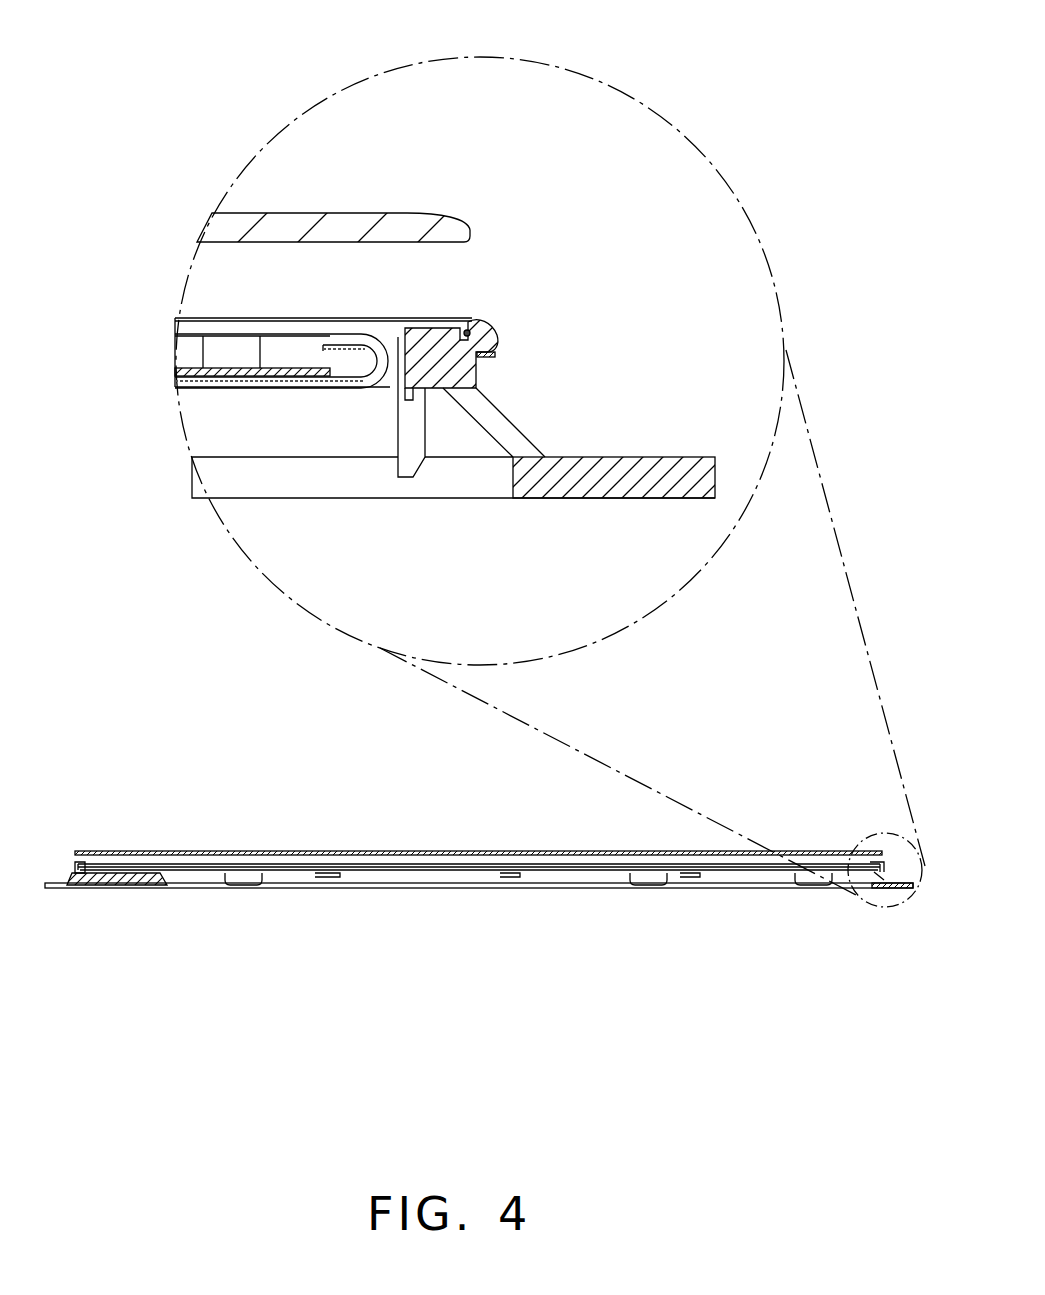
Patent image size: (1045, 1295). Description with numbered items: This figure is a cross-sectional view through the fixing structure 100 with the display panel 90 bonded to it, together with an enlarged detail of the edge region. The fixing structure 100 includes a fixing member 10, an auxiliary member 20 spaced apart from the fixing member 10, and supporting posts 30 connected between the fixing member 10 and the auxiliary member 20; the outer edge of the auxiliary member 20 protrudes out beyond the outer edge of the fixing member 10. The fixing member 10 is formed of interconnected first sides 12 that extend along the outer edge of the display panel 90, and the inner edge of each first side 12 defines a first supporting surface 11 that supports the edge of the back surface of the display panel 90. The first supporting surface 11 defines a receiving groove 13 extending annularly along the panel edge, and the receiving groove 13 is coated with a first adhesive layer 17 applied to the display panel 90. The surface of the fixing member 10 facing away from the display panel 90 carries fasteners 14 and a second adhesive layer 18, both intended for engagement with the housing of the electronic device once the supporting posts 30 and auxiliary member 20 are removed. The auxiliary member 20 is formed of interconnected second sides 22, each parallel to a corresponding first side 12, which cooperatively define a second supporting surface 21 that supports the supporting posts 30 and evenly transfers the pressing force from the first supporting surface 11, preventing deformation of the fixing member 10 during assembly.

The fixing structure 100 is at (469, 927).
The fixing member 10 is at (135, 869).
The first supporting surface 11 is at (425, 328).
The first side 12 is at (482, 333).
The receiving groove 13 is at (447, 347).
The fastener 14 is at (410, 430).
The first adhesive layer 17 is at (468, 330).
The second adhesive layer 18 is at (495, 355).
The auxiliary member 20 is at (53, 887).
The second supporting surface 21 is at (670, 455).
The second side 22 is at (690, 483).
The supporting post 30 is at (78, 876).
The display panel 90 is at (258, 228).